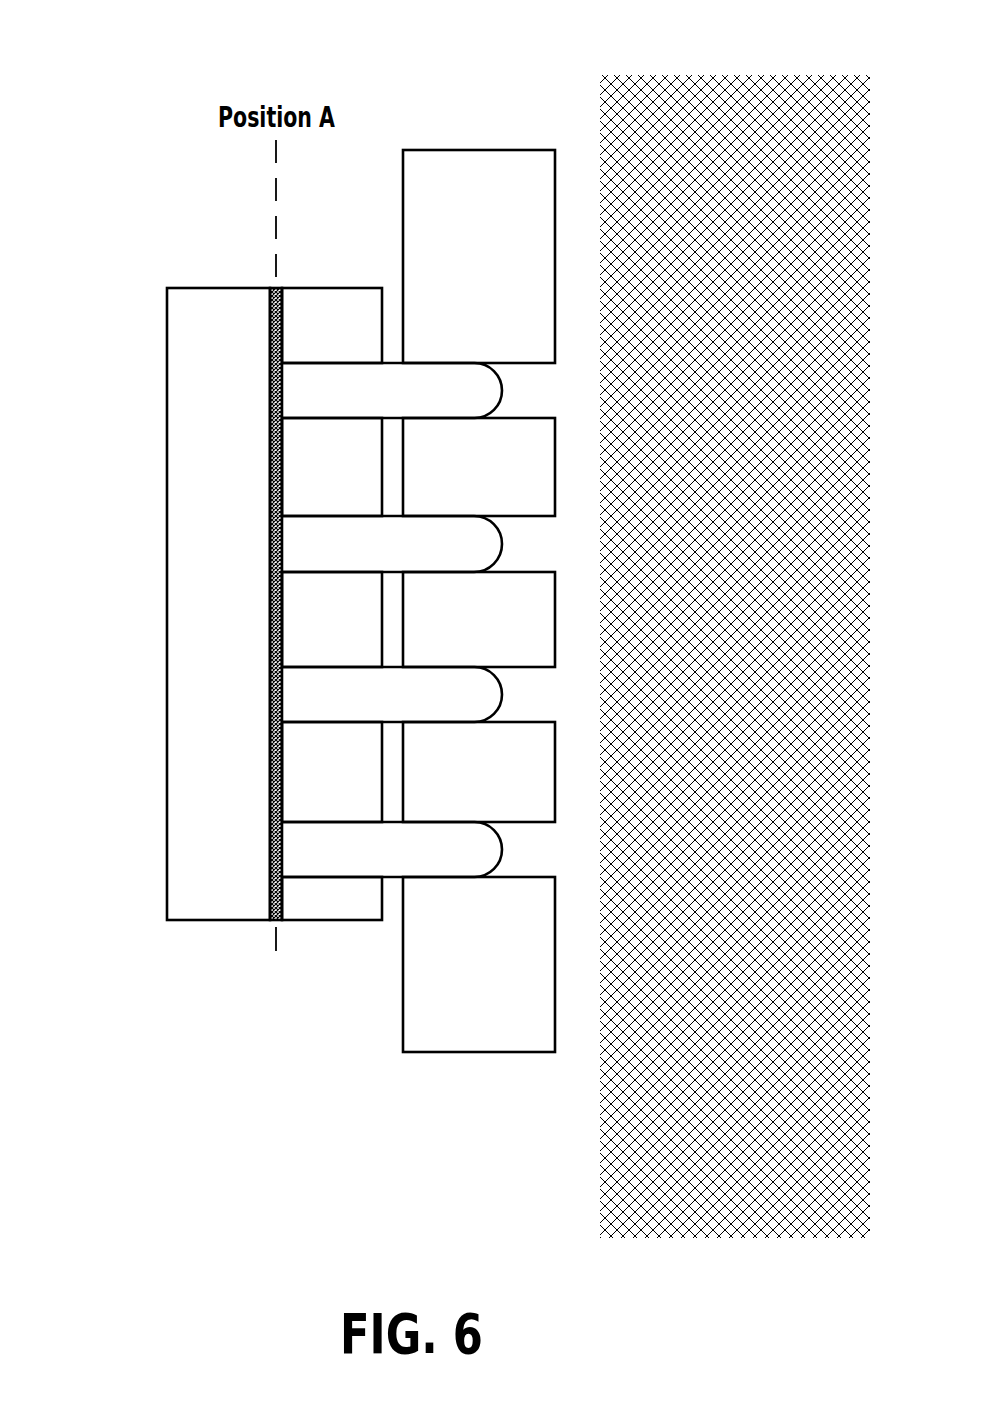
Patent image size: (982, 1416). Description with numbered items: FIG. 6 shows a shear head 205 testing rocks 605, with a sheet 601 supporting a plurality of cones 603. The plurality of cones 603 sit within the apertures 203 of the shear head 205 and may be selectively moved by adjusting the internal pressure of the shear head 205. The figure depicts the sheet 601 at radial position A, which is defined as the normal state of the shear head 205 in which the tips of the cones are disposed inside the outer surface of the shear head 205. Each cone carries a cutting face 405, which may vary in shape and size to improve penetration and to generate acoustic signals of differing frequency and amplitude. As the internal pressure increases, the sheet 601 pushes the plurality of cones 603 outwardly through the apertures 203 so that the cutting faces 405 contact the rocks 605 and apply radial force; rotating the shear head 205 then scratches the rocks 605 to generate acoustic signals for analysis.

The shear head 205 is at (86, 129).
The sheet 601 is at (270, 303).
The plurality of cones 603 is at (275, 893).
The apertures 203 is at (427, 822).
The cutting face 405 is at (498, 852).
The rocks 605 is at (598, 133).